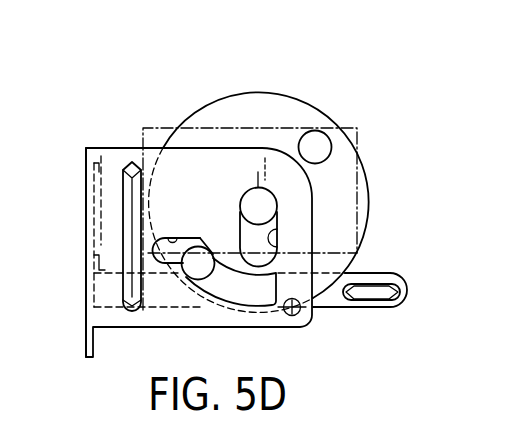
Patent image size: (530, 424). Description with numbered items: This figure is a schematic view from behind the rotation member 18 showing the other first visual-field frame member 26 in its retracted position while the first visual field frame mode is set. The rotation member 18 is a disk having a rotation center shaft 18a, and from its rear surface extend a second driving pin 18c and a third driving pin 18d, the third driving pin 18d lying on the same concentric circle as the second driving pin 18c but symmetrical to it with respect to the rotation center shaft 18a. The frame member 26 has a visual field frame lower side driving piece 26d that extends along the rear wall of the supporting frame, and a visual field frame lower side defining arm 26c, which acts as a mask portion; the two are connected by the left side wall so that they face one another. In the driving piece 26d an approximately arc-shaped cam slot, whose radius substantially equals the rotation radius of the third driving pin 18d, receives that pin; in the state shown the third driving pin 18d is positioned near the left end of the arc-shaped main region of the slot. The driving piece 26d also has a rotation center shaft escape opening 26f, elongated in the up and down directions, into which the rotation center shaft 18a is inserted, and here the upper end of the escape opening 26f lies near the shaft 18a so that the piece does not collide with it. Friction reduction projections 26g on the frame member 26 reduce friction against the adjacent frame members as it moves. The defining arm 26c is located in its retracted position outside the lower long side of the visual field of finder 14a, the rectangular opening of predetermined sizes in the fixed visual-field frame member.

The visual field of finder 14a is at (154, 148).
The rotation member 18 is at (287, 97).
The rotation center shaft 18a is at (248, 211).
The second driving pin 18c is at (315, 143).
The third driving pin 18d is at (206, 270).
The other first visual-field frame member 26 is at (290, 332).
The visual field frame lower side defining arm 26c is at (385, 276).
The visual field frame lower side driving piece 26d is at (105, 315).
The rotation center shaft escape opening 26f is at (277, 232).
The friction reduction projections 26g is at (131, 162).